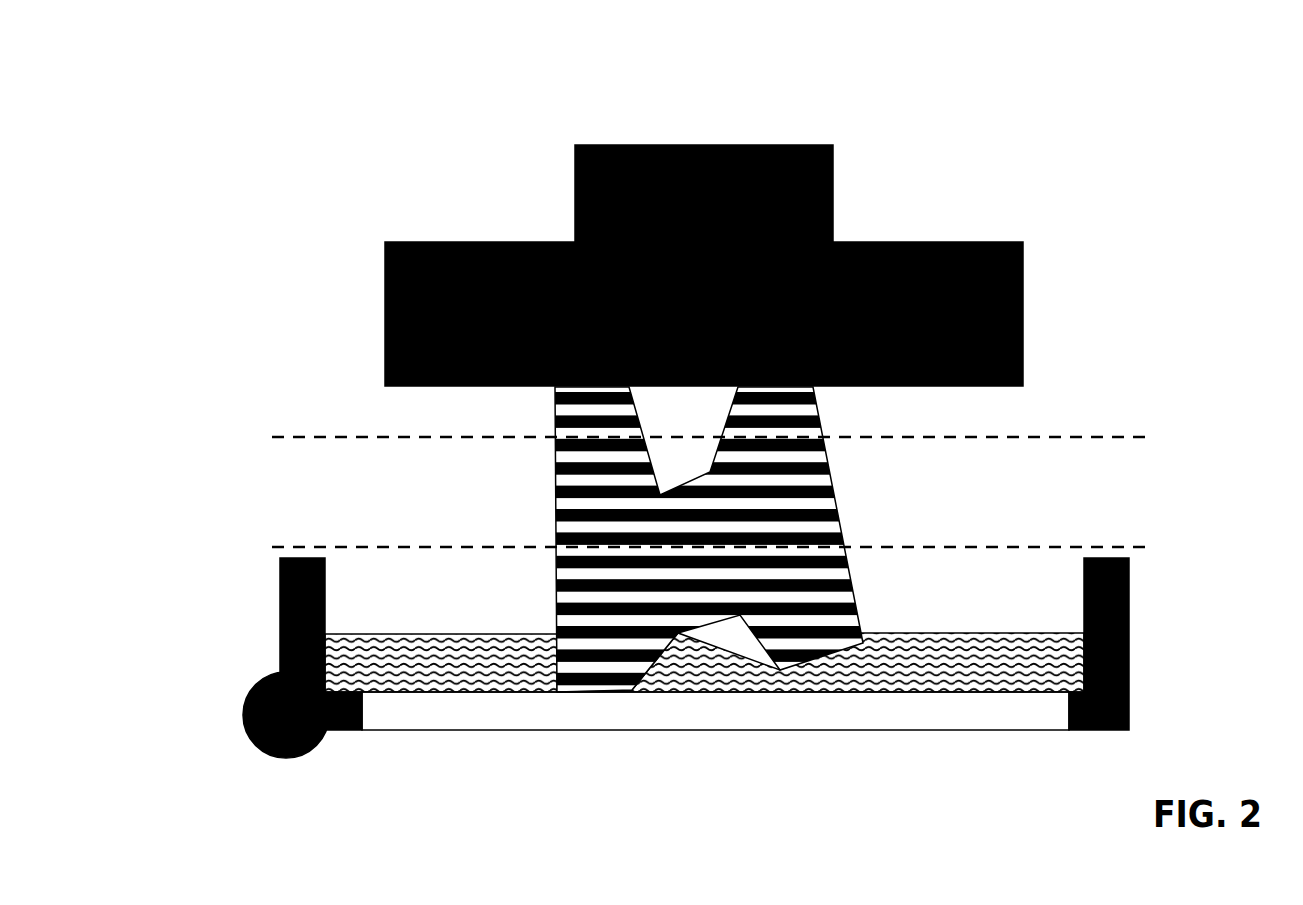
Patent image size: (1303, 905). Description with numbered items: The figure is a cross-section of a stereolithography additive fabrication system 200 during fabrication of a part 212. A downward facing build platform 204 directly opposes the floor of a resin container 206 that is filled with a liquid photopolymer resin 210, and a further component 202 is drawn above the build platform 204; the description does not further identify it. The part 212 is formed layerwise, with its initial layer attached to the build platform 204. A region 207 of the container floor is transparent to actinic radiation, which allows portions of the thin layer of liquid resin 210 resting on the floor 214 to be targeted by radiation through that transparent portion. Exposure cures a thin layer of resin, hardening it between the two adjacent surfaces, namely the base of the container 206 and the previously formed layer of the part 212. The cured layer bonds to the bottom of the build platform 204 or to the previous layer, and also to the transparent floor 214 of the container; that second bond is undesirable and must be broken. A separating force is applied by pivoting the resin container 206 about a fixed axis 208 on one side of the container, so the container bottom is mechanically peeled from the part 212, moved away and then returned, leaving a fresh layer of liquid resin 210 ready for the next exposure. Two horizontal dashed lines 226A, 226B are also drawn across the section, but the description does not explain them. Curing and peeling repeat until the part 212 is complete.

The assembly 200 is at (223, 62).
The die 202 is at (578, 137).
The build platform 204 is at (377, 233).
The resin container 206 is at (278, 556).
The transparent region of the resin container floor 207 is at (833, 722).
The fixed axis 208 is at (286, 731).
The photopolymer resin 210 is at (490, 668).
The part being fabricated 212 is at (556, 535).
The transparent floor of the container 214 is at (594, 694).
The first level 226A is at (708, 423).
The second level 226B is at (708, 532).